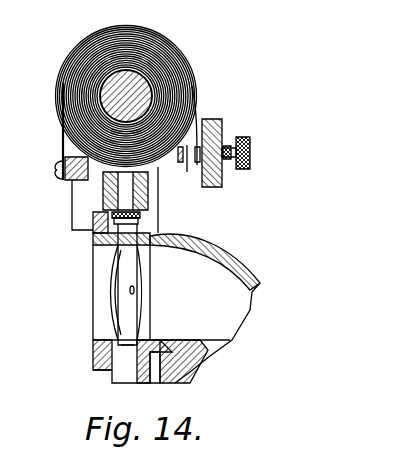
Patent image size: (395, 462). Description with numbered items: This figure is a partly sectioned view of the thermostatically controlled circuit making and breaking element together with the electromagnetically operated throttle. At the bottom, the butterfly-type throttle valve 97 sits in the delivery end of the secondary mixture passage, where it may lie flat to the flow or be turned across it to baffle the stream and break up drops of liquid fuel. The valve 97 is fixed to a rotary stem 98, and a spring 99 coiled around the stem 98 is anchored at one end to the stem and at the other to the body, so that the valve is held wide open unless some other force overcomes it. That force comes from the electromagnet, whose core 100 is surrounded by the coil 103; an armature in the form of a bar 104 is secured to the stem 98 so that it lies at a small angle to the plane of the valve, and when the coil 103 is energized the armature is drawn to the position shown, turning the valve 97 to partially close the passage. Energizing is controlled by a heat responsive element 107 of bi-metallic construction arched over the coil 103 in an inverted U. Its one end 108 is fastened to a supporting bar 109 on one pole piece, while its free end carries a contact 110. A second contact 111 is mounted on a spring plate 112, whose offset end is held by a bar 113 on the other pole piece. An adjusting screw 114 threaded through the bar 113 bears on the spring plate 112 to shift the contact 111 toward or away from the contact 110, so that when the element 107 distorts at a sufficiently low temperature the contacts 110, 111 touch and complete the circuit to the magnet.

The throttle valve 97 is at (112, 282).
The rotary stem 98 is at (130, 252).
The spring 99 is at (118, 226).
The core 100 is at (118, 93).
The coil 103 is at (92, 62).
The bar 104 is at (112, 198).
The heat responsive element 107 is at (62, 137).
The end 108 is at (64, 153).
The supporting bar 109 is at (72, 176).
The contact 110 is at (197, 164).
The contact 111 is at (187, 173).
The spring plate 112 is at (181, 163).
The bar 113 is at (210, 178).
The adjusting screw 114 is at (243, 136).